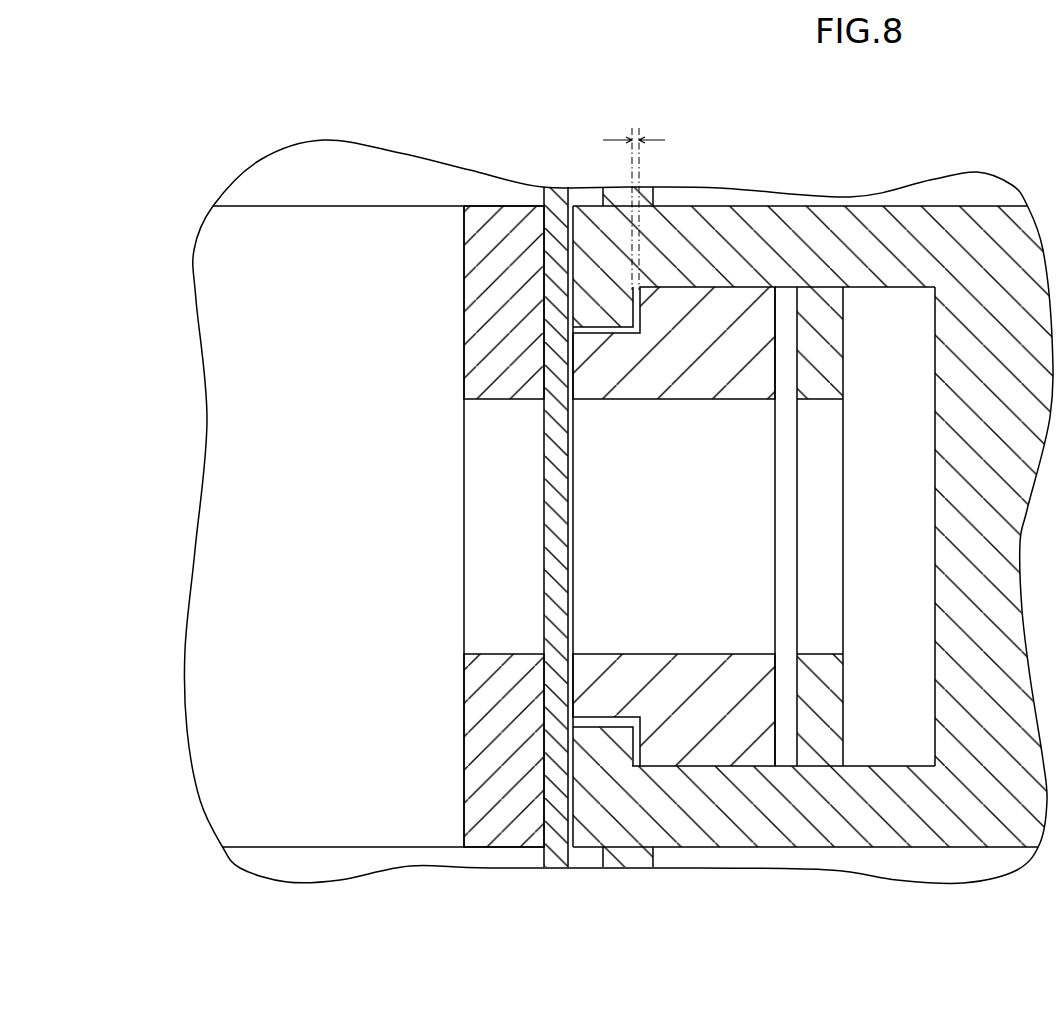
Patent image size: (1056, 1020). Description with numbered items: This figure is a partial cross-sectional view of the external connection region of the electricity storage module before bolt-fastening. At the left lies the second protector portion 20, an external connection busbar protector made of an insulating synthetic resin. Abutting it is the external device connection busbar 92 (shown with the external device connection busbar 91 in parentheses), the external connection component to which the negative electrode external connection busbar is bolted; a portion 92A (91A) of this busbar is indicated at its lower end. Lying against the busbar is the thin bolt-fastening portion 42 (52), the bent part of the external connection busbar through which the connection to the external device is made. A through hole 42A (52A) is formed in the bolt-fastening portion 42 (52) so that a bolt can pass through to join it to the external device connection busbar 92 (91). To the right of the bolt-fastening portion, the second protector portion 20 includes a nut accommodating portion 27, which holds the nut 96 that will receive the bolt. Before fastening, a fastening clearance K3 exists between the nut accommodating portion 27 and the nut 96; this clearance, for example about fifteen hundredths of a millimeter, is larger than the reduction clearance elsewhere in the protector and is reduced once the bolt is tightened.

The second protector portion 20 is at (339, 238).
The external device connection busbar 92 is at (496, 248).
The external device connection busbar 91 is at (495, 235).
The bolt-fastening portion 42 is at (564, 379).
The bolt-fastening portion 52 is at (558, 212).
The fastening clearance K3 is at (634, 194).
The nut accommodating portion 27 is at (712, 285).
The first spacer end portion 92A is at (478, 790).
The first spacer end portion (alternate) 91A is at (480, 657).
The through hole 42A is at (561, 778).
The through hole 52A is at (548, 653).
The nut 96 is at (735, 740).